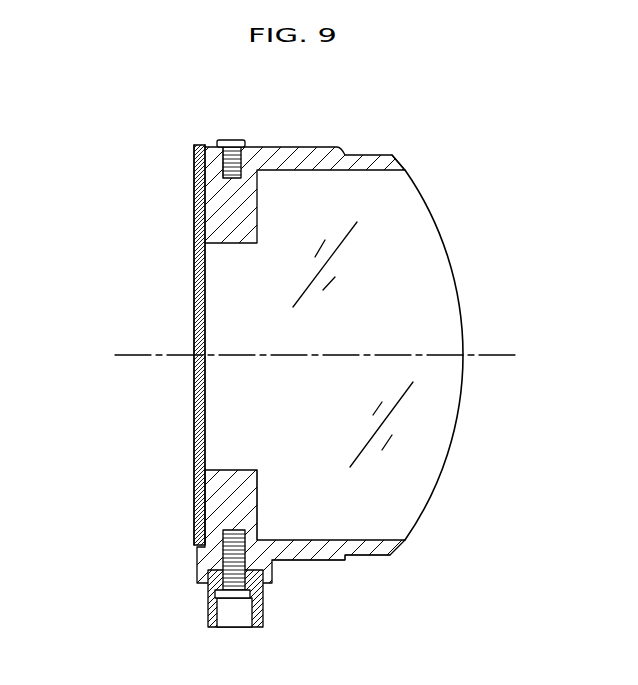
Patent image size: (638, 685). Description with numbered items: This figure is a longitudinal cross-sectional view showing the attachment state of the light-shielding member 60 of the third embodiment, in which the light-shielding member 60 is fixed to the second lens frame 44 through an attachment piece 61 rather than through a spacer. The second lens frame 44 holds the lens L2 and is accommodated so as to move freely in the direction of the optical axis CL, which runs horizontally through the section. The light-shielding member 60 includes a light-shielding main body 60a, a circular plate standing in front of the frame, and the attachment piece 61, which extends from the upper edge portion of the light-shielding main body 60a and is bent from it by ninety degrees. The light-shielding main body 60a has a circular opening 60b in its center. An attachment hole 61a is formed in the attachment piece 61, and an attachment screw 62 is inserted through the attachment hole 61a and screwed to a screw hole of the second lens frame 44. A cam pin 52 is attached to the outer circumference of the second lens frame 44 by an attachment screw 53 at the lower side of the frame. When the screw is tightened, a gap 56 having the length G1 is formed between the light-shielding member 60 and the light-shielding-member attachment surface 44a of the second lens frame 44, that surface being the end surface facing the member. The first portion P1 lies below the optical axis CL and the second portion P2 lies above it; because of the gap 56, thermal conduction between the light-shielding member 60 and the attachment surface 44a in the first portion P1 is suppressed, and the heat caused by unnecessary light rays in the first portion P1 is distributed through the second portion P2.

The second lens frame 44 is at (390, 163).
The light-shielding-member attachment surface 44a is at (193, 537).
The cam pin 52 is at (262, 613).
The attachment screw 53 is at (230, 598).
The gap 56 is at (197, 517).
The light-shielding member 60 is at (180, 199).
The light-shielding main body 60a is at (197, 237).
The circular opening 60b is at (197, 272).
The attachment piece 61 is at (302, 147).
The attachment hole 61a is at (243, 138).
The attachment screw 62 is at (223, 143).
The lens L2 is at (420, 278).
The optical axis CL is at (500, 357).
The first portion P1 is at (169, 460).
The second portion P2 is at (155, 151).
The length of the gap G1 is at (260, 490).